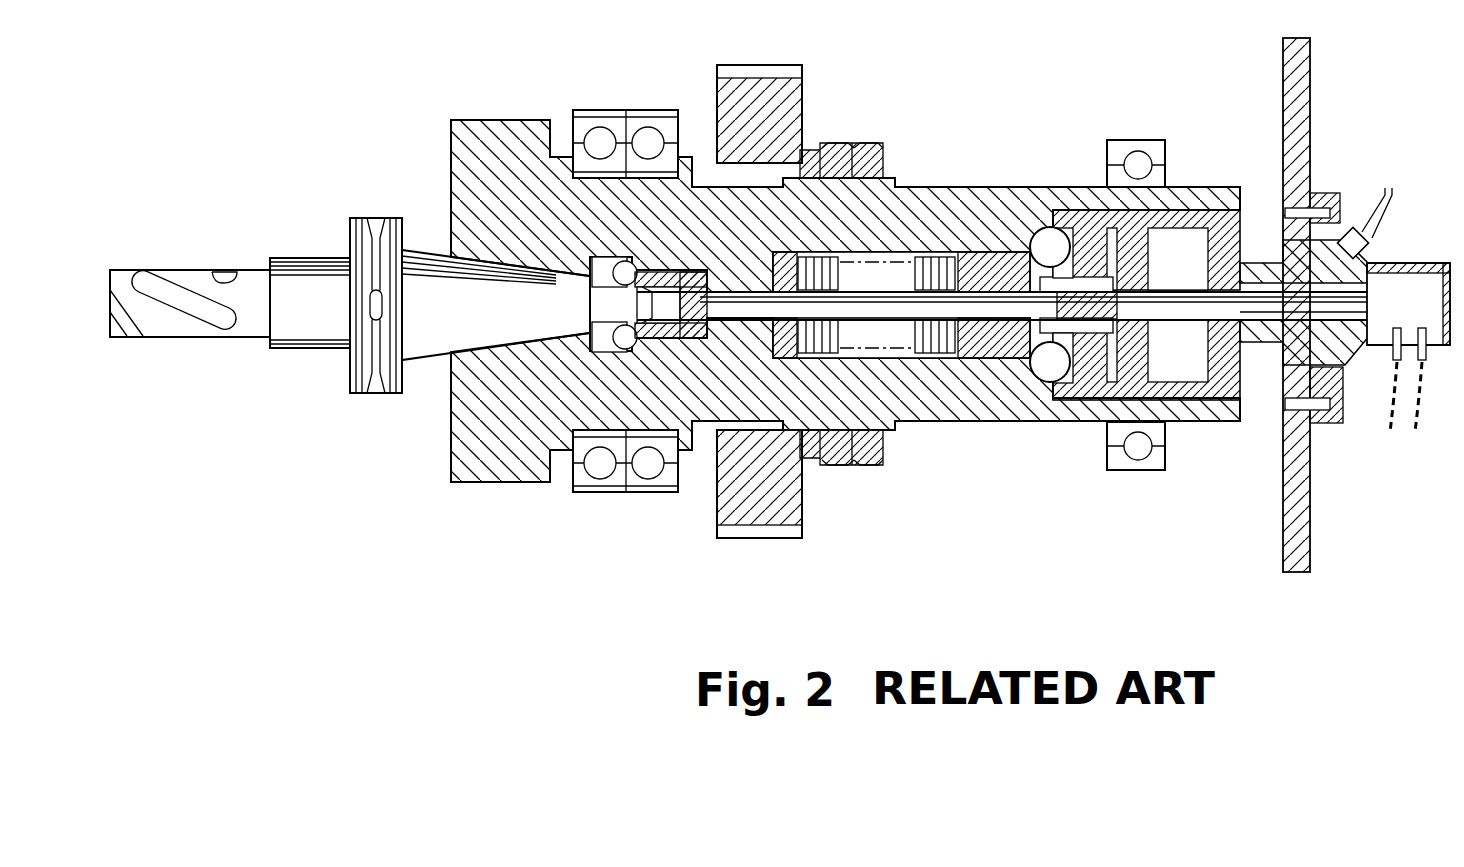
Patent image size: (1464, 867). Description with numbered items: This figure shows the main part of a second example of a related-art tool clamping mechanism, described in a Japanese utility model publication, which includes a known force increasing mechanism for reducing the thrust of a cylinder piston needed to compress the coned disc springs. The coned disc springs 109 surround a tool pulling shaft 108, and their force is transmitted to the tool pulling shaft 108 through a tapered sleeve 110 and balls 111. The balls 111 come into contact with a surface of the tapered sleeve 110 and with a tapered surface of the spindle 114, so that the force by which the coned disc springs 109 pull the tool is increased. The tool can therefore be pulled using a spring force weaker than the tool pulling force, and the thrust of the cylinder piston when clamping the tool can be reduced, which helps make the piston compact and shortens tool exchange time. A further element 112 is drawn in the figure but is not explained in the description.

The tool pulling shaft 108 is at (890, 312).
The coned disc springs 109 is at (955, 262).
The tapered sleeve 110 is at (1052, 250).
The balls 111 is at (1080, 237).
The ball bearing 112 is at (1085, 370).
The spindle 114 is at (875, 223).